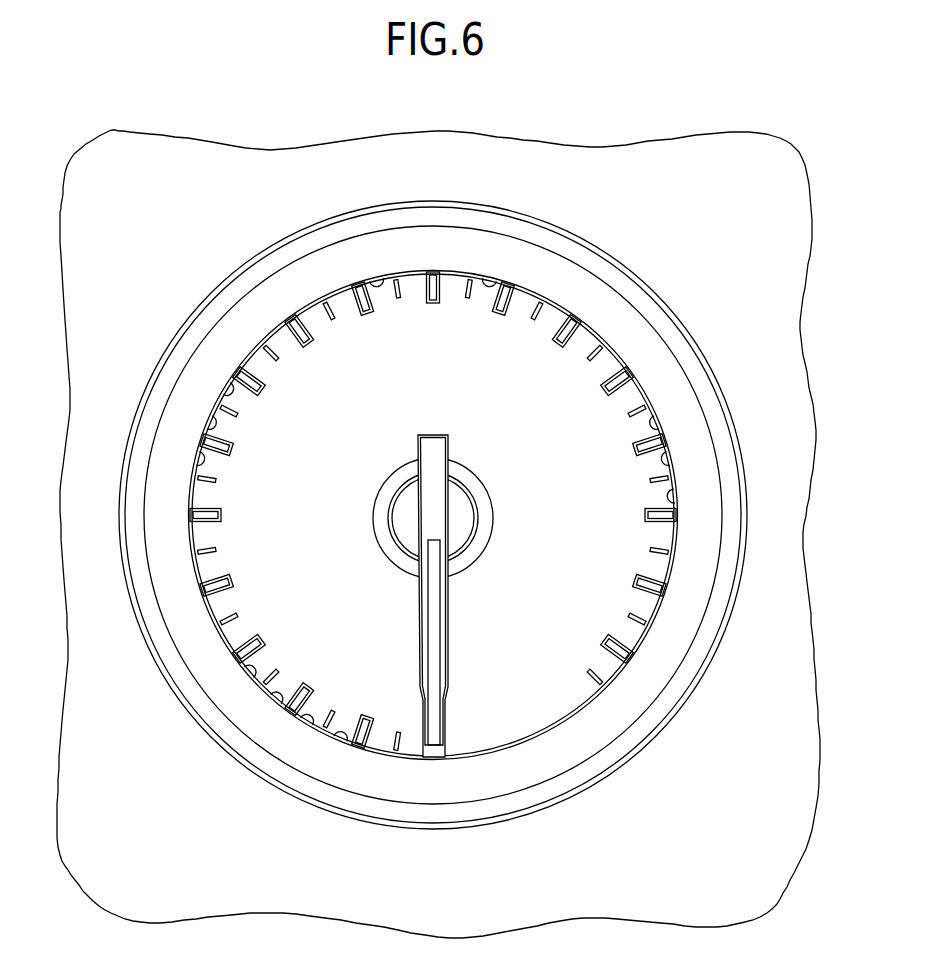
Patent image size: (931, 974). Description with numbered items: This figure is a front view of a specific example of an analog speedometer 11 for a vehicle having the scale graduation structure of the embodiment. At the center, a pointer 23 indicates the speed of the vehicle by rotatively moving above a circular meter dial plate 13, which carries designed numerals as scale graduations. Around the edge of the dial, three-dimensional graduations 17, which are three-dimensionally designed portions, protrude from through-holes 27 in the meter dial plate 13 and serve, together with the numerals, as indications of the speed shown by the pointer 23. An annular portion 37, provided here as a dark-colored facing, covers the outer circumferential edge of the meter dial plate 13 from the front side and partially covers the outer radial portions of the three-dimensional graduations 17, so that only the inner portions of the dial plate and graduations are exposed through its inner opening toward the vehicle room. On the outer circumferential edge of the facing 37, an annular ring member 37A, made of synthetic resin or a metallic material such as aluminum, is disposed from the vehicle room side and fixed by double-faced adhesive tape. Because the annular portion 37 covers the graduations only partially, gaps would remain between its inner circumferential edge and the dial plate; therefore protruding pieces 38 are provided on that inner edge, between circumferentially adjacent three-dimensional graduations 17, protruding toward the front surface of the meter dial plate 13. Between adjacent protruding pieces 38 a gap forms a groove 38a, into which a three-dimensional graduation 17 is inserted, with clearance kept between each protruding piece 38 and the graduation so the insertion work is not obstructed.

The analog speedometer 11 is at (716, 158).
The meter dial plate 13 is at (590, 347).
The three-dimensional graduation 17 is at (233, 385).
The through-hole 27 is at (246, 380).
The pointer 23 is at (455, 668).
The annular portion (facing) 37 is at (689, 582).
The annular member (ring member) 37A is at (614, 772).
The protruding piece 38 is at (378, 282).
The groove 38a is at (450, 277).